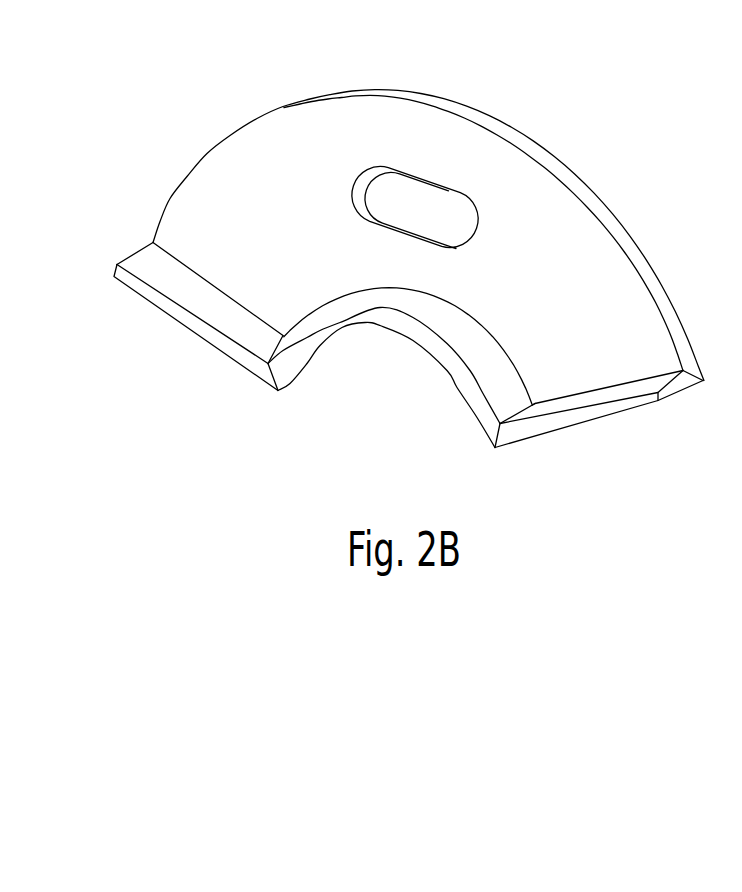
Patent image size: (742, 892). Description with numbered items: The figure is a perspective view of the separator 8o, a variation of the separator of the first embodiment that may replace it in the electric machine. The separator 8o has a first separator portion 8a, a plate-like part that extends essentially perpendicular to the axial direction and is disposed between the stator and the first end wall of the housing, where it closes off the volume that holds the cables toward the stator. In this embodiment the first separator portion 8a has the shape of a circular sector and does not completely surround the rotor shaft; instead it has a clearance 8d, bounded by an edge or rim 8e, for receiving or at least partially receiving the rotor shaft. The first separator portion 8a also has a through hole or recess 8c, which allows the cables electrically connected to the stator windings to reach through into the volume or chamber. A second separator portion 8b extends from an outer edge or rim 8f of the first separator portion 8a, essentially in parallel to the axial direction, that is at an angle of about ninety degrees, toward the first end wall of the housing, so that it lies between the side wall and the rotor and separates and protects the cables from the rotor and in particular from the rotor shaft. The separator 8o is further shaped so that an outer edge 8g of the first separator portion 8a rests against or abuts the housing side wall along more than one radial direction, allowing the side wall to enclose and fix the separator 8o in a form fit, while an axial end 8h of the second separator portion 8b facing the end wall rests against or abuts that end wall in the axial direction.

The separator 8o is at (585, 92).
The first separator portion 8a is at (630, 310).
The second separator portion 8b is at (168, 315).
The through hole or recess 8c is at (418, 207).
The clearance 8d is at (383, 382).
The edge or rim 8e is at (479, 321).
The outer edge or rim 8f is at (215, 368).
The outer edge 8g is at (583, 193).
The axial end 8h is at (127, 278).